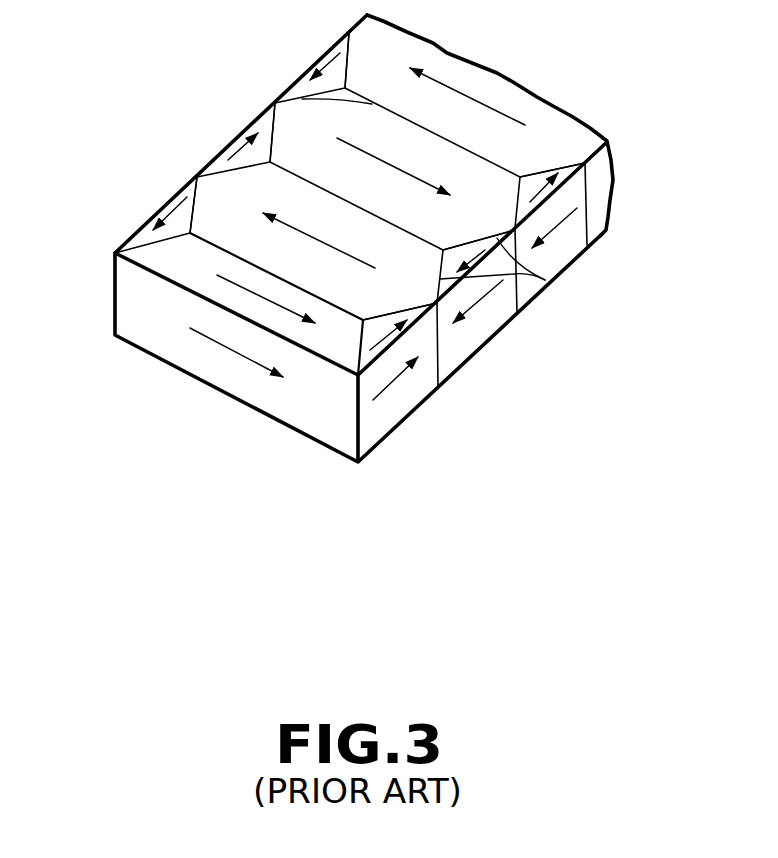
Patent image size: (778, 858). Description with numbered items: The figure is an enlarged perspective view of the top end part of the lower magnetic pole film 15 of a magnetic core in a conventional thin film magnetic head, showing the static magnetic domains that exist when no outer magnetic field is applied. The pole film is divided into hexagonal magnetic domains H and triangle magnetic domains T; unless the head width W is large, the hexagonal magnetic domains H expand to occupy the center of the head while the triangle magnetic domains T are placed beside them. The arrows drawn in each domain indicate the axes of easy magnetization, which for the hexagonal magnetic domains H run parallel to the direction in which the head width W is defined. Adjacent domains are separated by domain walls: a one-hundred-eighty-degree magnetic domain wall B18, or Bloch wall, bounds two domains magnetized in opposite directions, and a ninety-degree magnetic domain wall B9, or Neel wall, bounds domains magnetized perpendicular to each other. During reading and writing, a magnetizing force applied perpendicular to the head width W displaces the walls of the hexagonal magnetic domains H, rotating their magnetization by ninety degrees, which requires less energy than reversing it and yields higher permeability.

The lower magnetic pole film 15 is at (124, 247).
The triangle magnetic domains T is at (178, 203).
The head width W is at (288, 475).
The hexagonal magnetic domains H is at (430, 185).
The 180-degree magnetic domain wall B18 is at (315, 180).
The 90-degree magnetic domain wall B9 is at (545, 280).